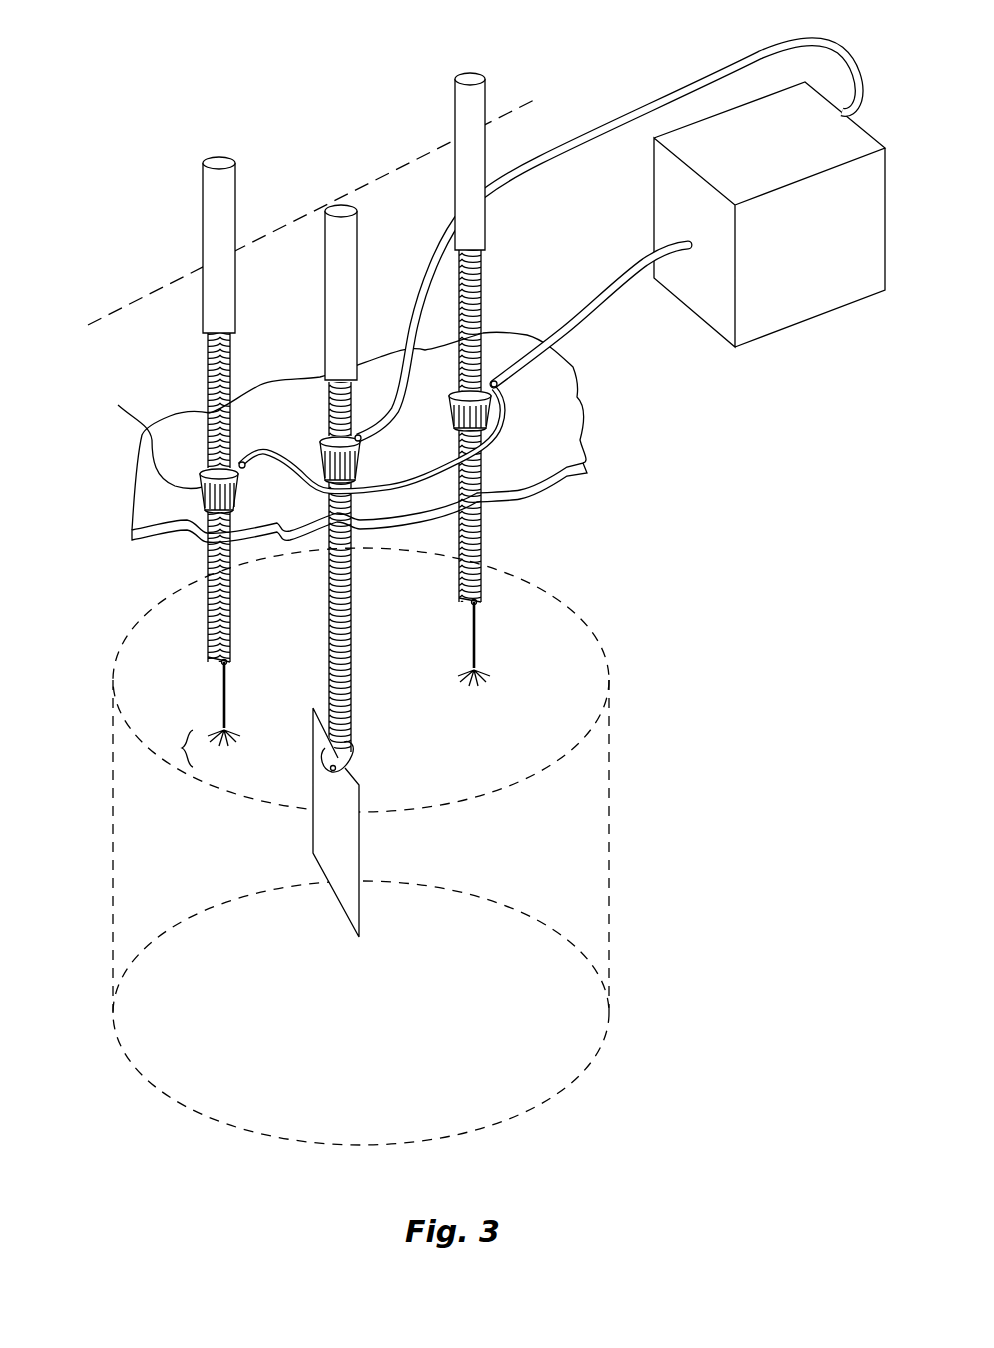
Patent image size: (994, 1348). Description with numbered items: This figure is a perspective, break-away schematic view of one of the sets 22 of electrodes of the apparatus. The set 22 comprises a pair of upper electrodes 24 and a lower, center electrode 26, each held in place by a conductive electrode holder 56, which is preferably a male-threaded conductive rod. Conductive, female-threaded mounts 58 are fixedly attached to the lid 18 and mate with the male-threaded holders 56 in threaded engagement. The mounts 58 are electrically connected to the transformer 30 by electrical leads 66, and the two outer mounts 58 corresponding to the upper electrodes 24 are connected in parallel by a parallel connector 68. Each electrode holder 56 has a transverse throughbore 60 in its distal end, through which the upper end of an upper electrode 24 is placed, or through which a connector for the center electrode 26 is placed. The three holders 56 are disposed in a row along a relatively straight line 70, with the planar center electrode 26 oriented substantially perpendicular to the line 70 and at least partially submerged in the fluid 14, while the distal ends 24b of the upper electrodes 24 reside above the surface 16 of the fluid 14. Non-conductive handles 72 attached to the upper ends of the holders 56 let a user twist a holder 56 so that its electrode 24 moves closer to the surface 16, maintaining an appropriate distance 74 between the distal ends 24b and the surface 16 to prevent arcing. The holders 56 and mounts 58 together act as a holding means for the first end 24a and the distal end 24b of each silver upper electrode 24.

The set of electrodes 22 is at (176, 100).
The straight line 70 is at (137, 297).
The non-conductive handle 72 is at (223, 197).
The electrical lead 66 is at (620, 113).
The conductive electrode holder 56 is at (487, 277).
The female-threaded mount 58 is at (203, 470).
The lid 18 is at (557, 428).
The transformer 30 is at (807, 265).
The transverse throughbore 60 is at (230, 657).
The parallel connector 68 is at (415, 490).
The upper electrode 24 is at (218, 666).
The first end of upper electrode 24a is at (210, 663).
The distal end of upper electrode 24b is at (223, 727).
The distance 74 is at (183, 748).
The surface of the fluid 16 is at (553, 727).
The fluid 14 is at (580, 850).
The lower, center electrode 26 is at (340, 845).